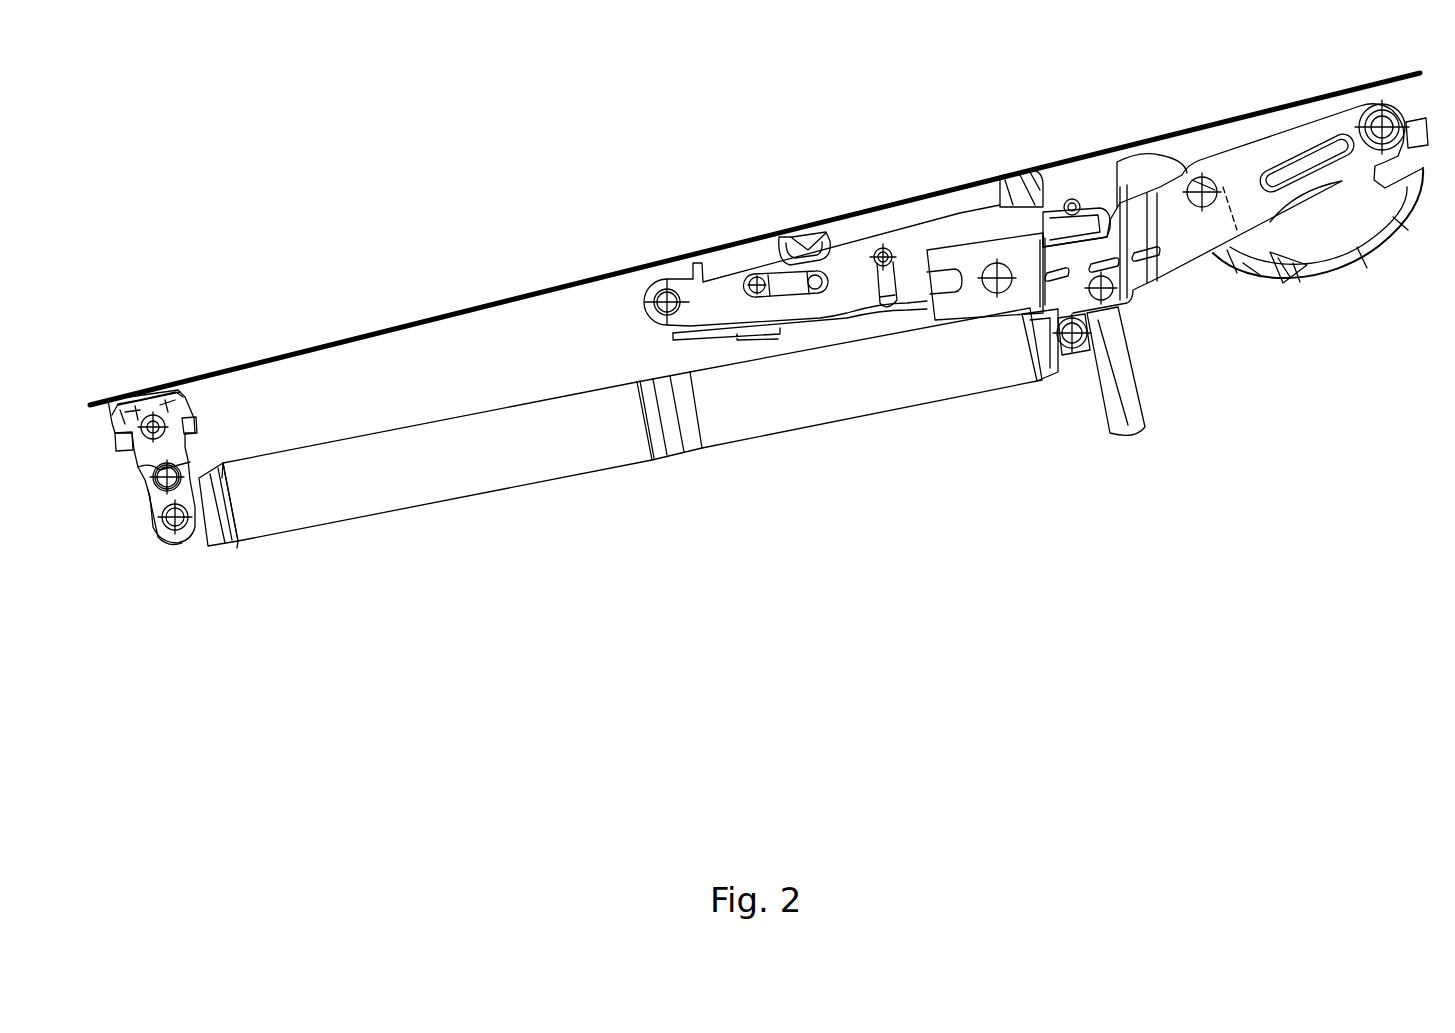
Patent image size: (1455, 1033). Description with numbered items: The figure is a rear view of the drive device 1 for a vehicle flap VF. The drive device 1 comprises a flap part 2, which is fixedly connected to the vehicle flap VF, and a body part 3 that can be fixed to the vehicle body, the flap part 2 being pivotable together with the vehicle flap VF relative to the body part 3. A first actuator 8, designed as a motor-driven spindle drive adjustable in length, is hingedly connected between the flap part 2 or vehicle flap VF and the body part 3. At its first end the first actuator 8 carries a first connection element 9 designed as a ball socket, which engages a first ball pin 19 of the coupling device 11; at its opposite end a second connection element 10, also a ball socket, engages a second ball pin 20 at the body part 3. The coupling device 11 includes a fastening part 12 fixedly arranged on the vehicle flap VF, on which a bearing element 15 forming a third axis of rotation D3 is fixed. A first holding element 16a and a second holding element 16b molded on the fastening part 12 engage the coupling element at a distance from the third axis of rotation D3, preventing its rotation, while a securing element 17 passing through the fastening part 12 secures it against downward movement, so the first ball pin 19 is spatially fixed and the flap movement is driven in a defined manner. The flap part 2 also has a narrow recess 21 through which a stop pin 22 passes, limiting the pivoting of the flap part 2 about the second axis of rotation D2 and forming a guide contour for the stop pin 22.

The drive device 1 is at (840, 455).
The flap part 2 is at (923, 227).
The body part 3 is at (1193, 235).
The first actuator 8 is at (515, 473).
The first connection element 9 is at (220, 518).
The second connection element 10 is at (1043, 345).
The coupling device 11 is at (157, 567).
The fastening part 12 is at (132, 398).
The bearing element 15 is at (163, 478).
The first holding element 16a is at (193, 422).
The second holding element 16b is at (117, 440).
The securing element 17 is at (154, 425).
The first ball pin 19 is at (184, 523).
The second ball pin 20 is at (1064, 360).
The narrow recess 21 is at (883, 283).
The stop pin 22 is at (880, 250).
The second axis of rotation D2 is at (663, 300).
The third axis of rotation D3 is at (172, 474).
The vehicle flap VF is at (440, 316).